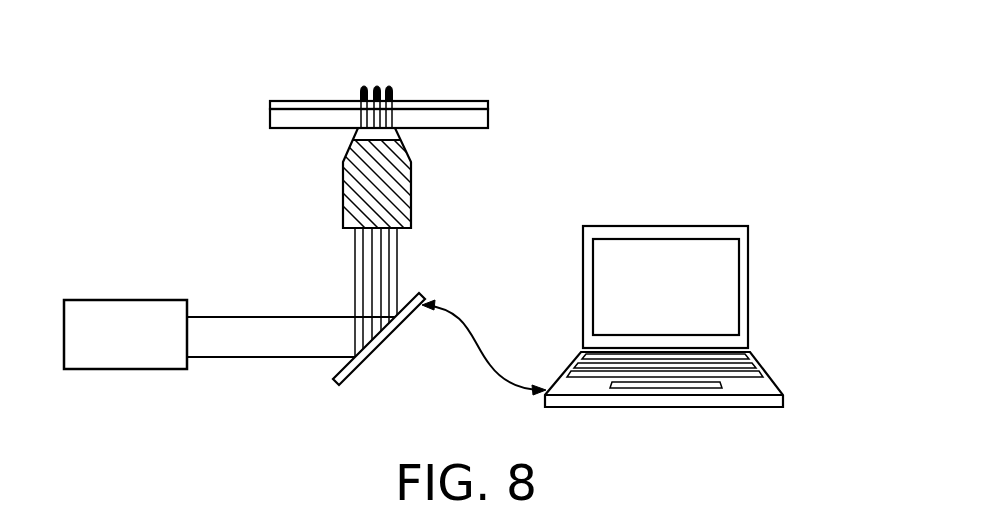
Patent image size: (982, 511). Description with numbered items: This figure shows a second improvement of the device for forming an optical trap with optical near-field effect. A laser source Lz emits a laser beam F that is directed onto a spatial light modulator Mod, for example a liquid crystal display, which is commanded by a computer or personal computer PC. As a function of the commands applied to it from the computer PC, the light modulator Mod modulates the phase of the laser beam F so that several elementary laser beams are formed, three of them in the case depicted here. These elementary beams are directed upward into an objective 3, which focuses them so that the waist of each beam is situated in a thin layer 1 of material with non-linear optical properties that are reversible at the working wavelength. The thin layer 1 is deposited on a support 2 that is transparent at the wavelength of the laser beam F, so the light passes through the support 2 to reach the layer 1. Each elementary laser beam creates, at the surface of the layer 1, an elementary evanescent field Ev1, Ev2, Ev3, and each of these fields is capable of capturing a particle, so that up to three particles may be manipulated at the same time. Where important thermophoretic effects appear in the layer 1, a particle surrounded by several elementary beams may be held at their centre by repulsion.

The thin layer 1 is at (282, 104).
The support 2 is at (278, 118).
The objective 3 is at (398, 197).
The elementary evanescent field Ev1 is at (362, 88).
The elementary evanescent field Ev2 is at (380, 87).
The elementary evanescent field Ev3 is at (390, 88).
The laser beam F is at (275, 328).
The laser source Lz is at (123, 350).
The spatial light modulator Mod is at (378, 343).
The computer PC is at (752, 307).